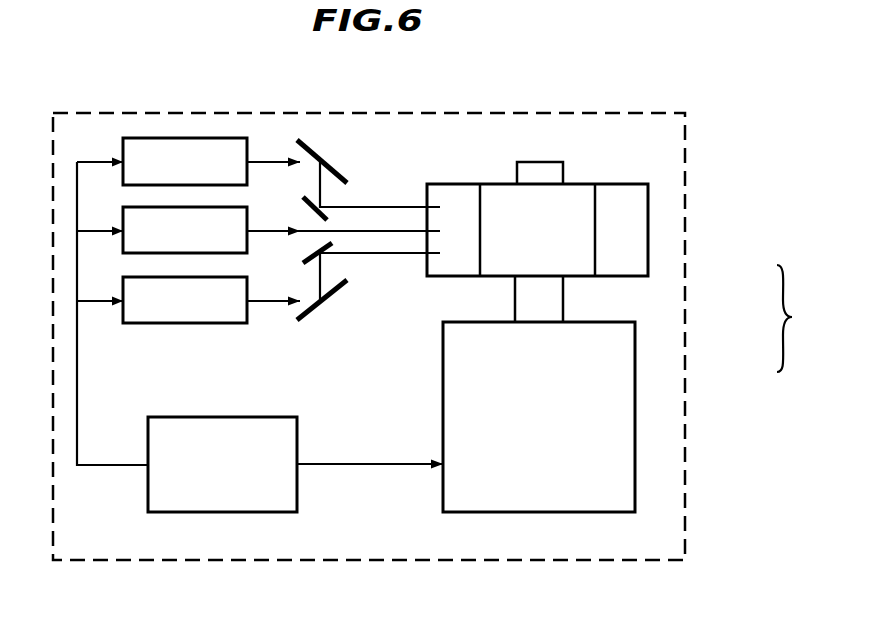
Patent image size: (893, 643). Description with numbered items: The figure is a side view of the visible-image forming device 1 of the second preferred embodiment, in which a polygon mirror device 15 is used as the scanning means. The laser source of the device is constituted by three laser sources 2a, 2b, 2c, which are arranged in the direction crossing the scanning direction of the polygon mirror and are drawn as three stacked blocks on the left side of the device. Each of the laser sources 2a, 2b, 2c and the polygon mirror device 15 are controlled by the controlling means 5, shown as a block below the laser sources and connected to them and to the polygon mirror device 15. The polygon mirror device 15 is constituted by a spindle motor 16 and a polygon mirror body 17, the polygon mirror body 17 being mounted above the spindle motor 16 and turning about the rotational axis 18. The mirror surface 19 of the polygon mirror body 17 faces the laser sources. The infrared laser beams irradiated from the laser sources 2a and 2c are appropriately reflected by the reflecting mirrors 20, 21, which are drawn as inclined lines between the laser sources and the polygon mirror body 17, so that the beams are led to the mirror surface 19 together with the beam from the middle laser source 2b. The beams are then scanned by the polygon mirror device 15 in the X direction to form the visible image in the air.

The visible-image forming device 1 is at (467, 112).
The laser source 2a is at (183, 150).
The laser source 2b is at (207, 217).
The laser source 2c is at (194, 323).
The controlling means 5 is at (288, 497).
The polygon mirror device 15 is at (820, 318).
The spindle motor 16 is at (623, 382).
The polygon mirror body 17 is at (660, 239).
The rotational axis 18 is at (535, 170).
The mirror surface 19 is at (457, 197).
The reflecting mirror 20 is at (325, 152).
The reflecting mirror 21 is at (330, 215).